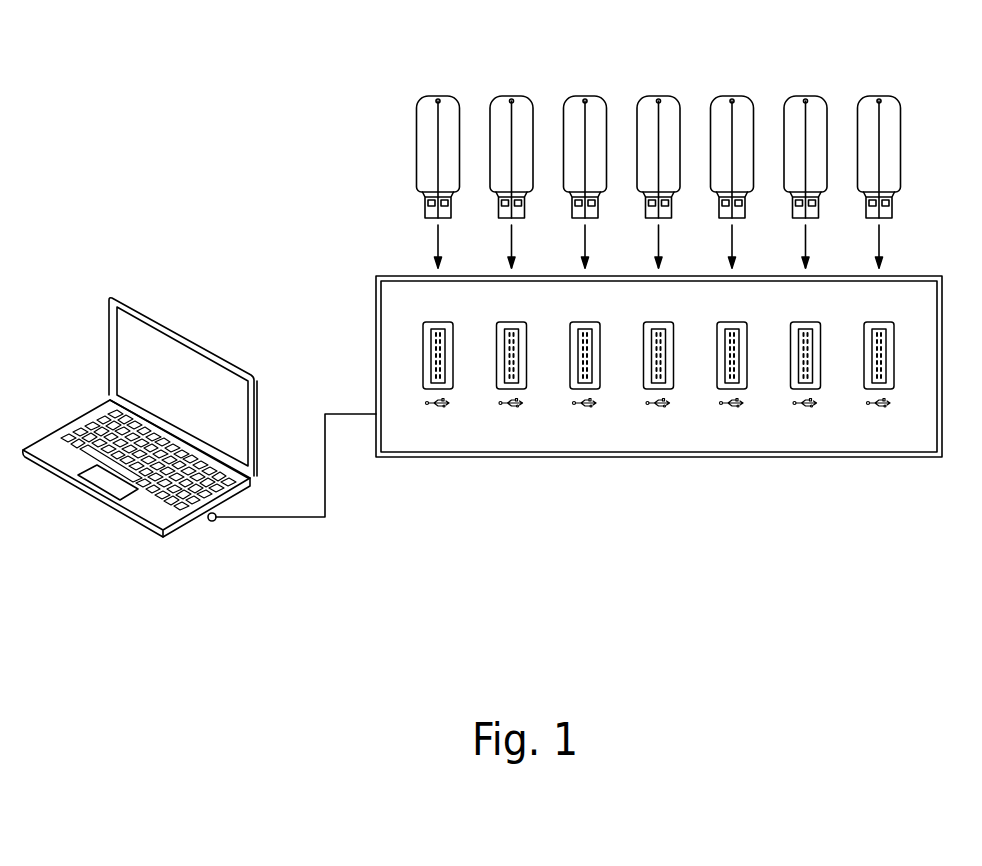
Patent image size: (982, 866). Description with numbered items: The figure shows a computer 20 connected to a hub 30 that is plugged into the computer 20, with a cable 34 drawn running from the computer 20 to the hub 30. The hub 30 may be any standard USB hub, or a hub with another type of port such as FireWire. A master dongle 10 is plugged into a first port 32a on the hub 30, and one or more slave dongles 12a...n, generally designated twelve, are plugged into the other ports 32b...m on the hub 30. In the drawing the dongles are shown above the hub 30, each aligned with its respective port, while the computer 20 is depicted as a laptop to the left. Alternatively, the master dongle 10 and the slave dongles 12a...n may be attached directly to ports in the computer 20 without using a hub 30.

The master dongle 10 is at (438, 85).
The slave dongles 12a...n is at (658, 85).
The computer 20 is at (163, 537).
The hub 30 is at (768, 457).
The first port 32a is at (438, 433).
The other ports 32b...m is at (512, 433).
The cable 34 is at (302, 518).